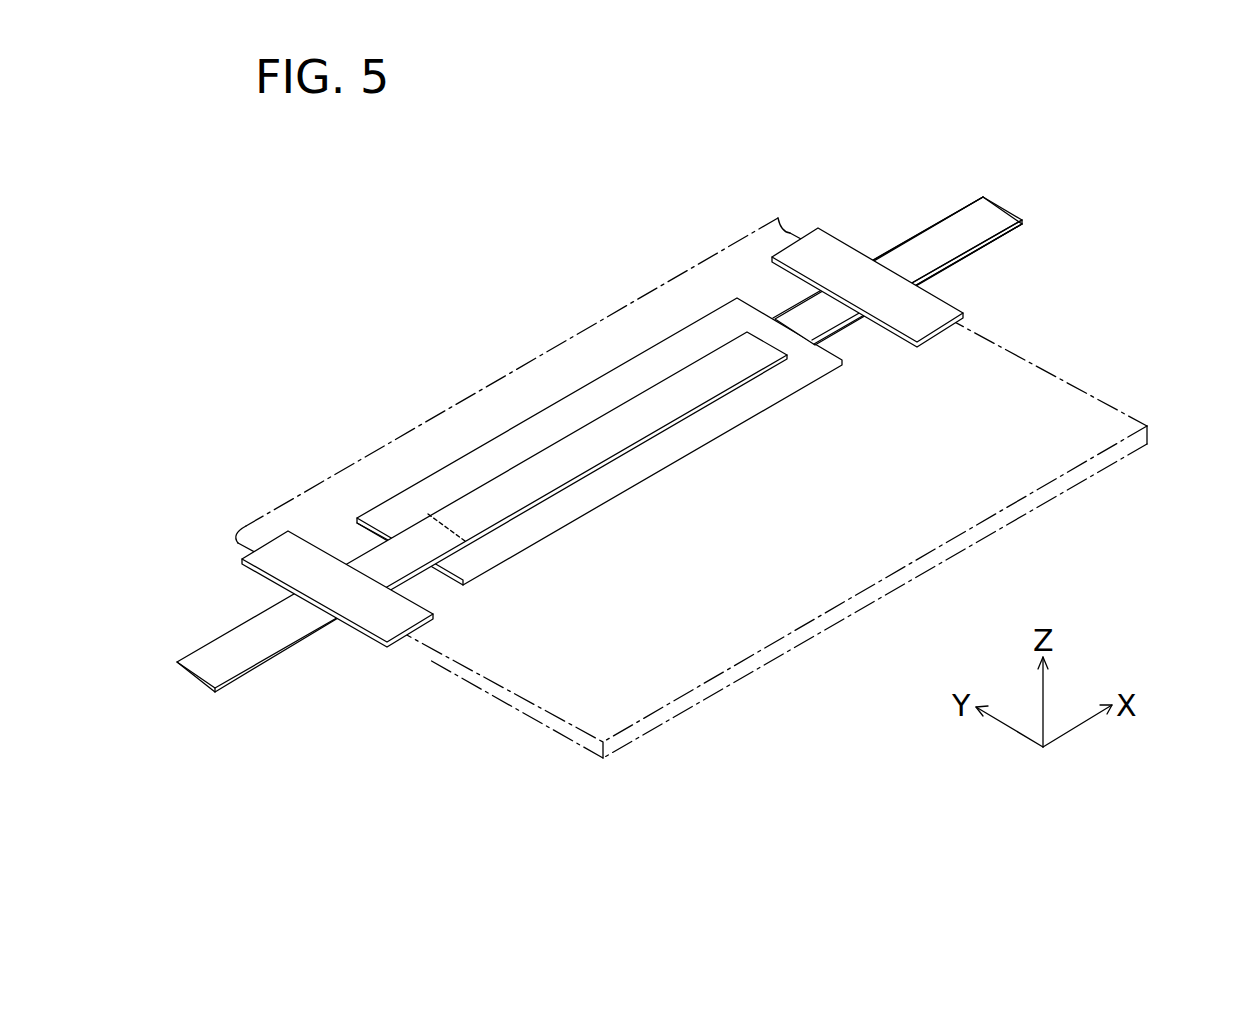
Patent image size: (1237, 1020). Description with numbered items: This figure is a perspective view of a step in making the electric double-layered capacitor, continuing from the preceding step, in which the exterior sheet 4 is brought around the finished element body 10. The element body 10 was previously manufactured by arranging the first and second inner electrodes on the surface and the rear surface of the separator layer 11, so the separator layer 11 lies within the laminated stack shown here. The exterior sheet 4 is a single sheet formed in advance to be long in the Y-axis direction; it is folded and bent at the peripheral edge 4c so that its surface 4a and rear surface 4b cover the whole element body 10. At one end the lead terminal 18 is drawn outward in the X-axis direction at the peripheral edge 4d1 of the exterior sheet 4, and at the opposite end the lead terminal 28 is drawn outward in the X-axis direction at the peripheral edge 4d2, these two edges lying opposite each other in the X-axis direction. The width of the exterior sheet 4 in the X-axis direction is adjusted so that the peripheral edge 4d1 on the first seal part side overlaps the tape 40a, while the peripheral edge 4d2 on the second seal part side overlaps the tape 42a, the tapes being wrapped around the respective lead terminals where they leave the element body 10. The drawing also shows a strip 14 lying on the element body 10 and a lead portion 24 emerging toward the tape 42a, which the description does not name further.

The exterior sheet 4 is at (736, 503).
The surface 4a is at (736, 492).
The rear surface 4b is at (1068, 392).
The peripheral edge 4c is at (328, 478).
The peripheral edge 4d1 is at (437, 652).
The peripheral edge 4d2 is at (1113, 407).
The element body 10 is at (591, 415).
The separator layer 11 is at (555, 425).
The lead strip 14 is at (500, 495).
The lead terminal 18 is at (227, 648).
The positive electrode lead 24 is at (797, 317).
The lead terminal 28 is at (937, 240).
The tape 40a is at (373, 618).
The tape 42a is at (937, 340).